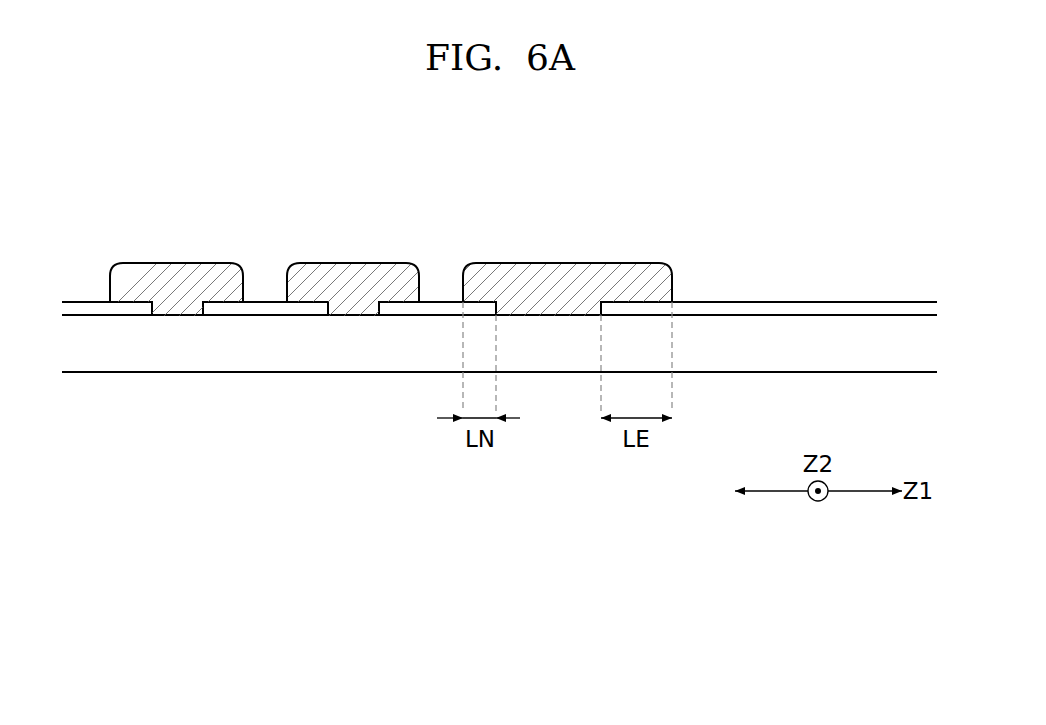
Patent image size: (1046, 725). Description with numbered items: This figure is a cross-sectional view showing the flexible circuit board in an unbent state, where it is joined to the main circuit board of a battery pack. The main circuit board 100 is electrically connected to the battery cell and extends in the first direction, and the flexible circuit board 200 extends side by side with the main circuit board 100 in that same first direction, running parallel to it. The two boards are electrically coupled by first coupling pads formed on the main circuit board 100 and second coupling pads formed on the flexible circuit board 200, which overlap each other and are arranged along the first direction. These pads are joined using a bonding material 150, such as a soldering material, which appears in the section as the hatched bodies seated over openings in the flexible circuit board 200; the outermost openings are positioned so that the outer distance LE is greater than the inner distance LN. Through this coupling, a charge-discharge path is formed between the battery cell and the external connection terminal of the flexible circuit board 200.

The main circuit board 100 is at (180, 358).
The bonding material 150 is at (181, 270).
The flexible circuit board 200 is at (822, 305).